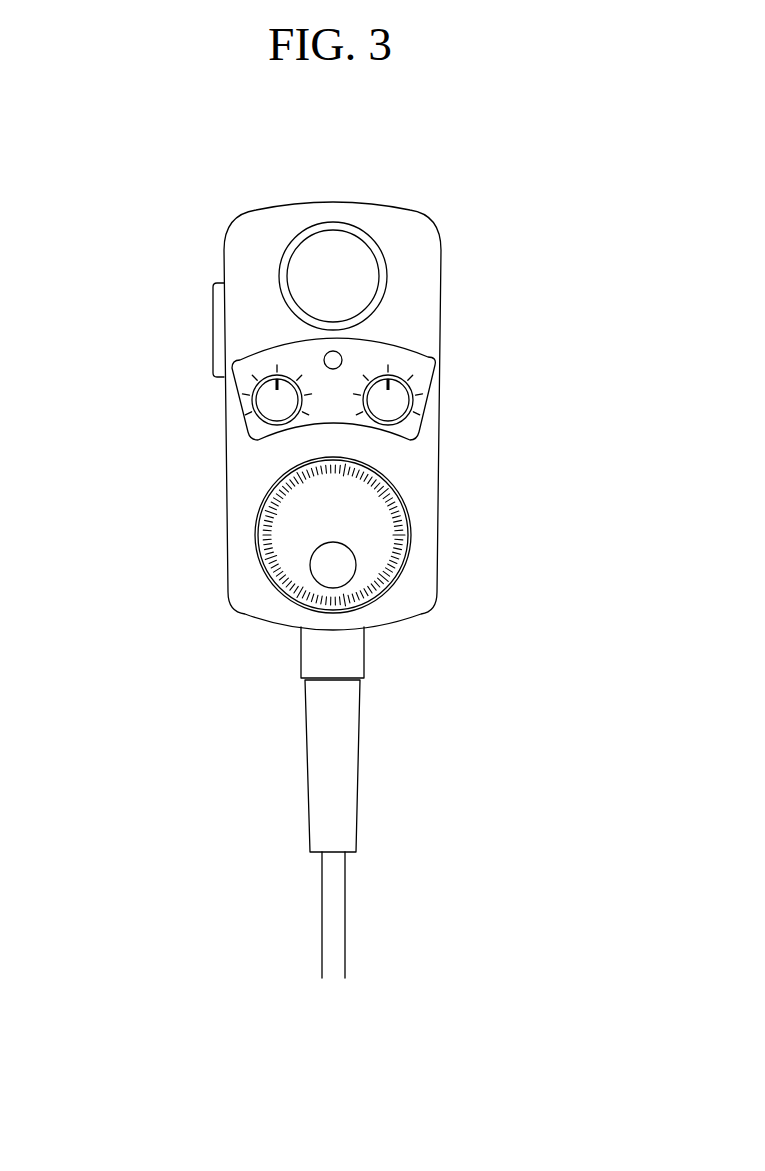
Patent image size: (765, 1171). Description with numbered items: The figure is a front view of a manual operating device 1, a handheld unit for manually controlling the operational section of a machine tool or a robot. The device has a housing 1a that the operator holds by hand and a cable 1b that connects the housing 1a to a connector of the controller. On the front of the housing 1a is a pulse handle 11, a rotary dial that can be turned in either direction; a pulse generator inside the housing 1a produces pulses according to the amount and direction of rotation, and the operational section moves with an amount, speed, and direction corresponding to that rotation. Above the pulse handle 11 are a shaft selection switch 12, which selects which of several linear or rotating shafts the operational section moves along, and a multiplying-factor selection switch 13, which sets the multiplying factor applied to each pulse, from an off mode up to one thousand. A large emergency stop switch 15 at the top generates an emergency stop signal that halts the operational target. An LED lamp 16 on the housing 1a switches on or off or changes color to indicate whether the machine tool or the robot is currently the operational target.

The manual operating device 1 is at (86, 186).
The housing 1a is at (439, 535).
The cable 1b is at (345, 905).
The pulse handle 11 is at (295, 542).
The shaft selection switch 12 is at (267, 403).
The multiplying-factor selection switch 13 is at (400, 400).
The emergency stop switch 15 is at (313, 273).
The LED lamp 16 is at (342, 359).